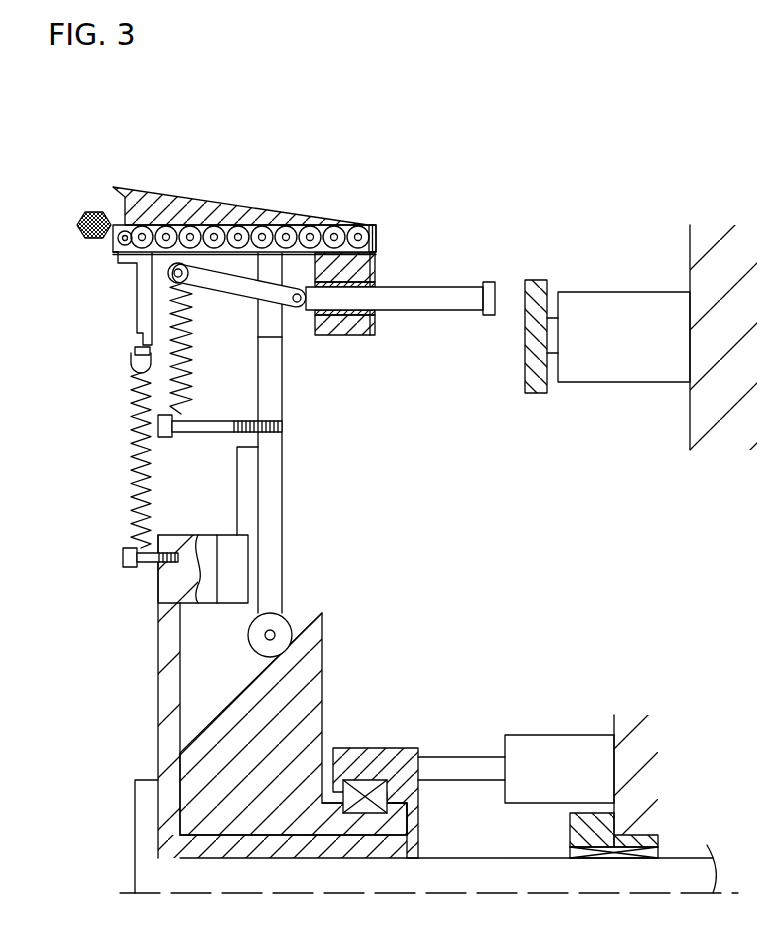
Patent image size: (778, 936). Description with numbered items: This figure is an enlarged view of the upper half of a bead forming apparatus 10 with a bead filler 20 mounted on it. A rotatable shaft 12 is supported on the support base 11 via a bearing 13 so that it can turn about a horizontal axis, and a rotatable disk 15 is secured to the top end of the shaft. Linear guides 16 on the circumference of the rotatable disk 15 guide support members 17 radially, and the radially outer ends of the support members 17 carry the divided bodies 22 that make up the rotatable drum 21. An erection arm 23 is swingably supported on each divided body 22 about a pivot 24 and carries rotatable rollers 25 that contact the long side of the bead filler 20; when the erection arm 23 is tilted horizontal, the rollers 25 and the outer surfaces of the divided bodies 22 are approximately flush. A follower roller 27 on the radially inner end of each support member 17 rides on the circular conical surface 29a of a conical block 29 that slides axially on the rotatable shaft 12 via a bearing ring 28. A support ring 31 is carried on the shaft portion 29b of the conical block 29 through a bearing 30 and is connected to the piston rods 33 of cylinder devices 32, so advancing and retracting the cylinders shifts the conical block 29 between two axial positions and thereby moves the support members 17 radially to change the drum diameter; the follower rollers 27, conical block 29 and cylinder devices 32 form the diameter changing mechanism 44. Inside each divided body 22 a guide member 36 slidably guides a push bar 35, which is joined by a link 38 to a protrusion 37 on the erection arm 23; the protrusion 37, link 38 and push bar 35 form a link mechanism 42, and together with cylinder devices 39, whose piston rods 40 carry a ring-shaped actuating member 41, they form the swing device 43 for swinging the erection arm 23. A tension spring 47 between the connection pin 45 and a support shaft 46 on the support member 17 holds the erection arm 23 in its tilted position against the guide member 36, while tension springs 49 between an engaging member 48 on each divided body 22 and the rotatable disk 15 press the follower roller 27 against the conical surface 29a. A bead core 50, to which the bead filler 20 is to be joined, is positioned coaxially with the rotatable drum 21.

The bead forming apparatus 10 is at (298, 172).
The support base 11 is at (705, 257).
The rotatable shaft 12 is at (490, 880).
The bearing 13 is at (618, 853).
The rotatable disk 15 is at (170, 662).
The linear guide 16 is at (238, 558).
The support member 17 is at (270, 463).
The bead filler 20 is at (200, 212).
The rotatable drum 21 is at (238, 219).
The divided body 22 is at (375, 237).
The erection arm 23 is at (128, 250).
The pivot 24 is at (122, 245).
The rotatable roller 25 is at (288, 228).
The follower roller 27 is at (285, 626).
The bearing ring 28 is at (310, 853).
The conical block 29 is at (320, 683).
The circular conical surface 29a is at (253, 683).
The shaft portion 29b is at (388, 822).
The bearing 30 is at (368, 792).
The support ring 31 is at (407, 758).
The cylinder device 32 is at (568, 758).
The piston rod 33 is at (467, 768).
The push bar 35 is at (430, 298).
The guide member 36 is at (358, 327).
The protrusion 37 is at (182, 257).
The link 38 is at (230, 242).
The cylinder device 39 is at (611, 364).
The piston rod 40 is at (553, 330).
The actuating member 41 is at (527, 358).
The link mechanism 42 is at (298, 343).
The swing device 43 is at (571, 325).
The diameter changing mechanism 44 is at (473, 723).
The connection pin 45 is at (182, 280).
The support shaft 46 is at (207, 433).
The tension spring 47 is at (188, 393).
The engaging member 48 is at (138, 302).
The tension spring 49 is at (132, 430).
The bead core 50 is at (96, 210).